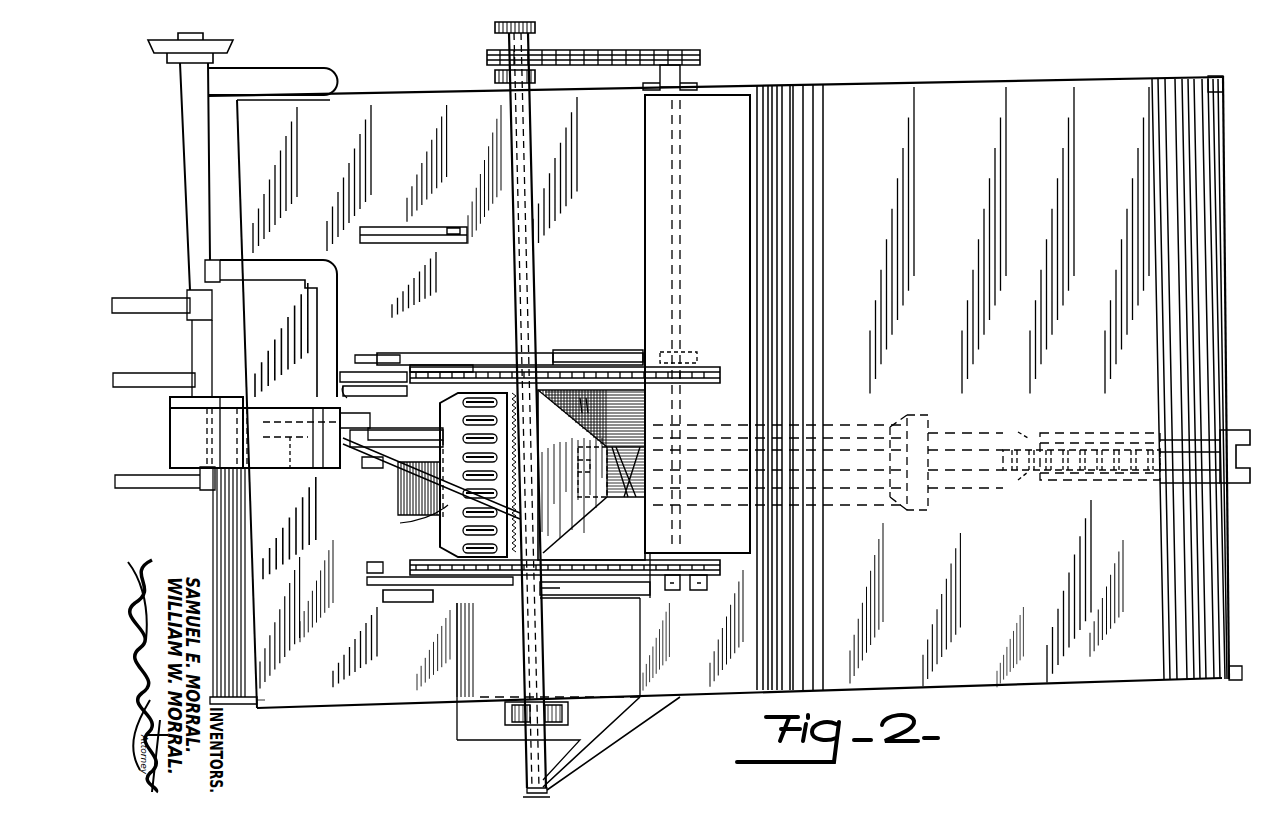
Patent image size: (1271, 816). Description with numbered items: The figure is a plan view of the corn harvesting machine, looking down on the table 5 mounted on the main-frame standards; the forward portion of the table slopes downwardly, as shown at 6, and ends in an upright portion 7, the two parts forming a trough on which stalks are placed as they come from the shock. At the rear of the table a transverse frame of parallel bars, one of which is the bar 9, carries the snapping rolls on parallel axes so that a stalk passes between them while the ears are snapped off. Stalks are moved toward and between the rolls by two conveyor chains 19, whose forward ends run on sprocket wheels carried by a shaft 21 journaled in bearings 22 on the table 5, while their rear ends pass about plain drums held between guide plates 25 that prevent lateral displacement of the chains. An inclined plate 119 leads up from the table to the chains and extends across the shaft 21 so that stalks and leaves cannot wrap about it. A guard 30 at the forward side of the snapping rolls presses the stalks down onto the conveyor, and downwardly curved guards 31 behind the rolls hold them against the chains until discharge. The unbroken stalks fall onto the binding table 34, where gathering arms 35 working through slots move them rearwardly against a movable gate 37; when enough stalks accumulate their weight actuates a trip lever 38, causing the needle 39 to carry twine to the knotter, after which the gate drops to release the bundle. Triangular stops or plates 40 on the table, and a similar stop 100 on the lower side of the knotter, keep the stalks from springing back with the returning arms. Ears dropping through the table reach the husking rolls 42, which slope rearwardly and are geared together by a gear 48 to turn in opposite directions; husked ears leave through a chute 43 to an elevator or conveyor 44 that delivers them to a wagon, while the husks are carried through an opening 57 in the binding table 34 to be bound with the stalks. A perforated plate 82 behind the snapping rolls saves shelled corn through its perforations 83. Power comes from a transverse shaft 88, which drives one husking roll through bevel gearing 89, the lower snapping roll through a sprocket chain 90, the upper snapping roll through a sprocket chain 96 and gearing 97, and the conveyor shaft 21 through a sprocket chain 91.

The table 5 is at (615, 625).
The sloping forward portion of the table 6 is at (715, 392).
The upright portion of the table 7 is at (1200, 528).
The bar of the transverse frame 9 is at (526, 663).
The sprocket chains 19 is at (468, 368).
The shaft 21 is at (683, 296).
The bearings 22 is at (682, 73).
The guide plates 25 is at (430, 370).
The guard 30 is at (614, 352).
The downwardly curved guards 31 is at (400, 356).
The binding table 34 is at (284, 658).
The gathering arms 35 is at (452, 243).
The stop or gate 37 is at (225, 518).
The trip lever 38 is at (280, 420).
The needle 39 is at (430, 445).
The stops or plates 40 is at (368, 372).
The husking rolls 42 is at (630, 498).
The chute 43 is at (966, 452).
The elevator or conveyor 44 is at (1108, 452).
The gear 48 is at (587, 513).
The opening in the binding table 57 is at (400, 505).
The plate 82 is at (400, 522).
The perforations 83 is at (448, 520).
The transverse shaft 88 is at (540, 672).
The bevel gearing 89 is at (591, 475).
The sprocket chain 90 is at (505, 718).
The sprocket chain 91 is at (597, 53).
The sprocket chain 96 is at (537, 80).
The gearing 97 is at (494, 28).
The stop 100 is at (204, 466).
The inclined plate 119 is at (697, 324).